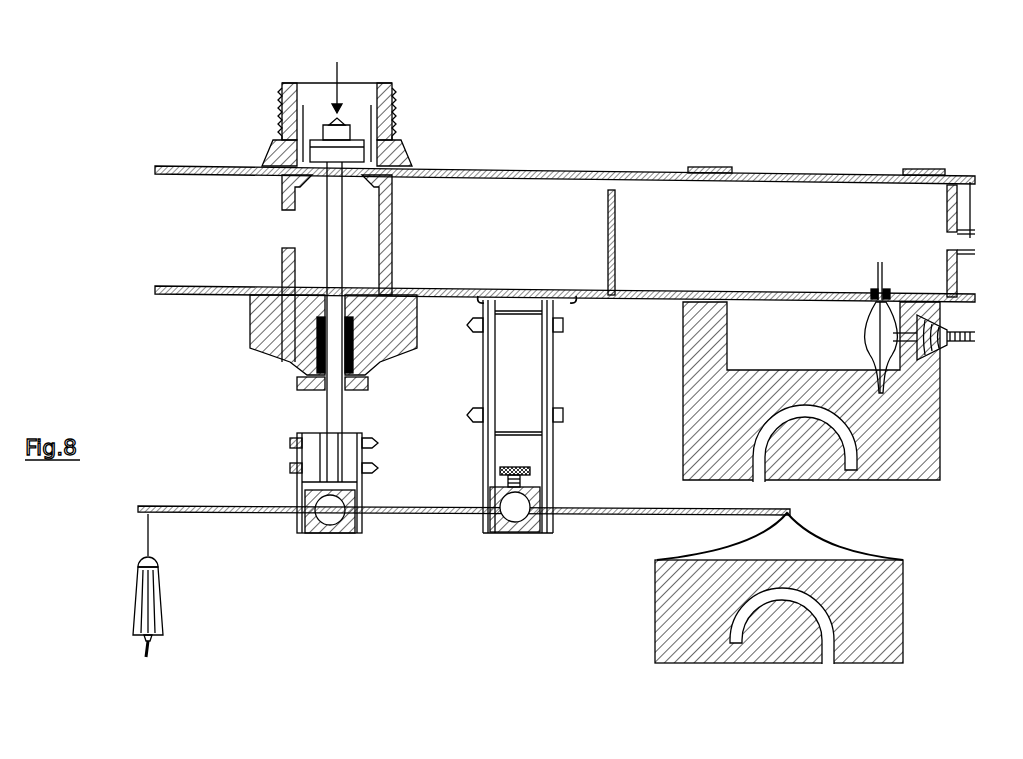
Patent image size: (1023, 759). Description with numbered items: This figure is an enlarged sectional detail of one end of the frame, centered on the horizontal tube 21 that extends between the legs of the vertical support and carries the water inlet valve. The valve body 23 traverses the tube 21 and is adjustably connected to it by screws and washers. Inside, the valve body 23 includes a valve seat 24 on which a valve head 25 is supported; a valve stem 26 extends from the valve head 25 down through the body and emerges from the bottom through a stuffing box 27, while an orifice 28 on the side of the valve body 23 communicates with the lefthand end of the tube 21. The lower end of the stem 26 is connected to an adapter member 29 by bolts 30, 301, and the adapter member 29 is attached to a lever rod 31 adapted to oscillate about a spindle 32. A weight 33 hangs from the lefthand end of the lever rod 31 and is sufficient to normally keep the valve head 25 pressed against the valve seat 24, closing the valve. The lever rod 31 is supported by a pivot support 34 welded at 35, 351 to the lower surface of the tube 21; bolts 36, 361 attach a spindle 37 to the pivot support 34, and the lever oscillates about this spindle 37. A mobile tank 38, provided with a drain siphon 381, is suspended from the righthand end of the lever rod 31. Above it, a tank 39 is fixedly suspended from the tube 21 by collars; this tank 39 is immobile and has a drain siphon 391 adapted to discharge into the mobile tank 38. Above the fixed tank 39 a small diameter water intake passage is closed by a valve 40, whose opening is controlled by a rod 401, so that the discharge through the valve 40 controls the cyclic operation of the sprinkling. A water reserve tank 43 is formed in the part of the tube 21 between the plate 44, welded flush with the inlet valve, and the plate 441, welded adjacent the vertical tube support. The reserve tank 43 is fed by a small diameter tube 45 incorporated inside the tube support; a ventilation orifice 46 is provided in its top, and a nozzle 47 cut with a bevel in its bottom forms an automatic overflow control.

The horizontal tube 21 is at (186, 237).
The valve body 23 is at (292, 105).
The valve seat 24 is at (370, 105).
The valve head 25 is at (322, 150).
The valve stem 26 is at (328, 402).
The stuffing box 27 is at (300, 371).
The orifice 28 is at (290, 232).
The adapter member 29 is at (302, 470).
The bolt 30 is at (370, 470).
The bolt 301 is at (372, 443).
The lever rod 31 is at (420, 515).
The spindle 32 is at (330, 520).
The weight 33 is at (147, 604).
The pivot support 34 is at (483, 458).
The weld 35 is at (479, 297).
The weld 351 is at (577, 297).
The bolt 36 is at (565, 420).
The bolt 361 is at (565, 328).
The spindle 37 is at (515, 515).
The mobile tank 38 is at (677, 622).
The drain siphon 381 is at (735, 644).
The tank 39 is at (918, 470).
The drain siphon 391 is at (845, 472).
The valve 40 is at (880, 272).
The rod 401 is at (960, 345).
The water reserve tank 43 is at (808, 227).
The plate 44 is at (393, 232).
The plate 441 is at (948, 222).
The small diameter tube 45 is at (970, 182).
The ventilation orifice 46 is at (540, 172).
The nozzle 47 is at (613, 250).